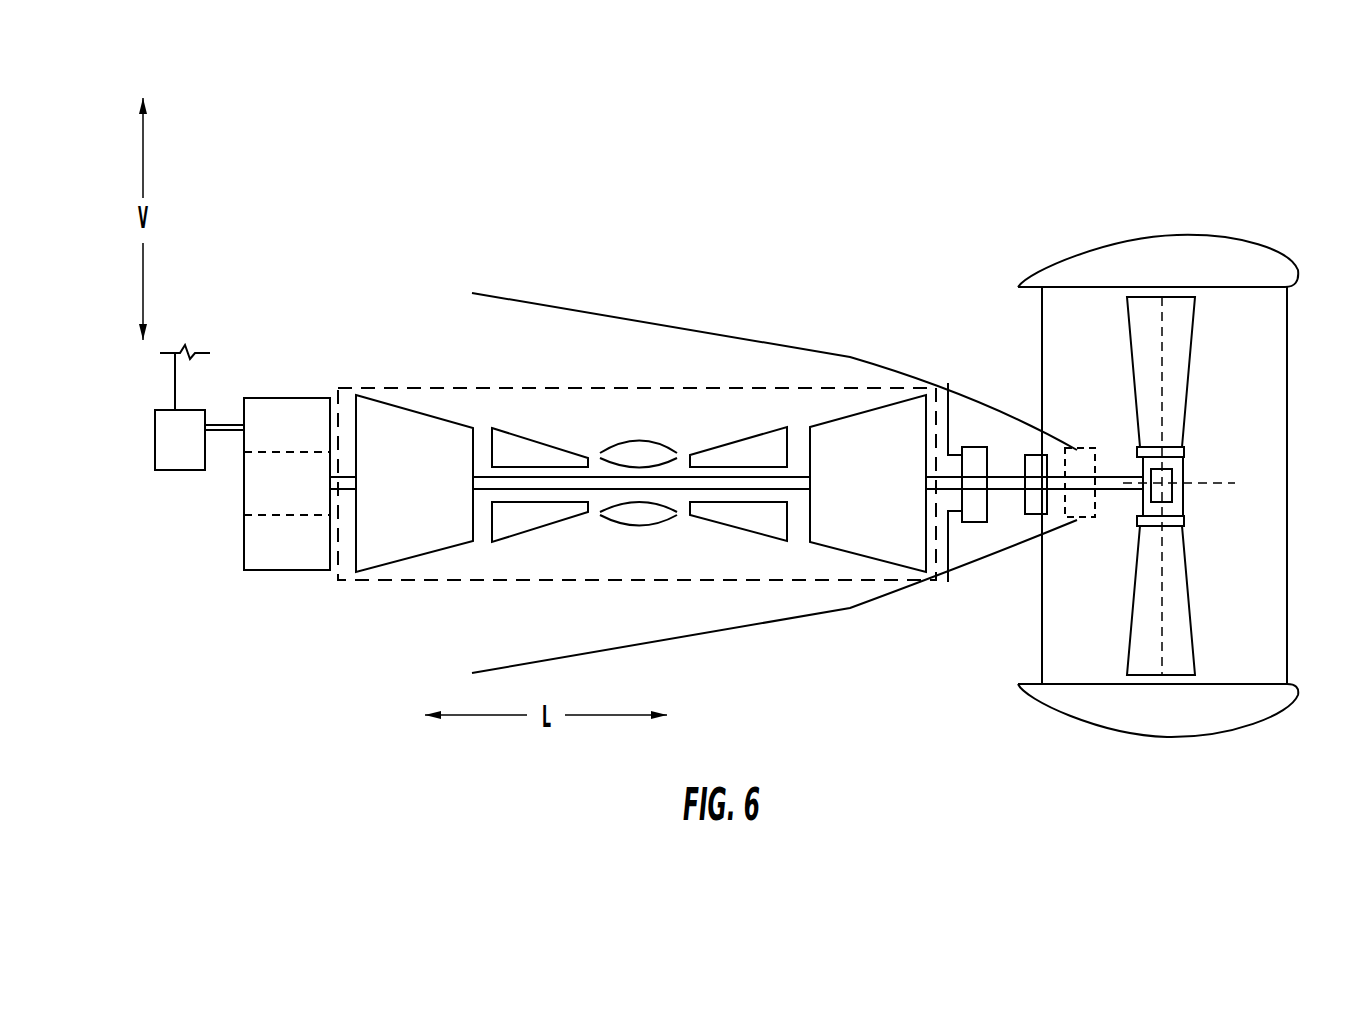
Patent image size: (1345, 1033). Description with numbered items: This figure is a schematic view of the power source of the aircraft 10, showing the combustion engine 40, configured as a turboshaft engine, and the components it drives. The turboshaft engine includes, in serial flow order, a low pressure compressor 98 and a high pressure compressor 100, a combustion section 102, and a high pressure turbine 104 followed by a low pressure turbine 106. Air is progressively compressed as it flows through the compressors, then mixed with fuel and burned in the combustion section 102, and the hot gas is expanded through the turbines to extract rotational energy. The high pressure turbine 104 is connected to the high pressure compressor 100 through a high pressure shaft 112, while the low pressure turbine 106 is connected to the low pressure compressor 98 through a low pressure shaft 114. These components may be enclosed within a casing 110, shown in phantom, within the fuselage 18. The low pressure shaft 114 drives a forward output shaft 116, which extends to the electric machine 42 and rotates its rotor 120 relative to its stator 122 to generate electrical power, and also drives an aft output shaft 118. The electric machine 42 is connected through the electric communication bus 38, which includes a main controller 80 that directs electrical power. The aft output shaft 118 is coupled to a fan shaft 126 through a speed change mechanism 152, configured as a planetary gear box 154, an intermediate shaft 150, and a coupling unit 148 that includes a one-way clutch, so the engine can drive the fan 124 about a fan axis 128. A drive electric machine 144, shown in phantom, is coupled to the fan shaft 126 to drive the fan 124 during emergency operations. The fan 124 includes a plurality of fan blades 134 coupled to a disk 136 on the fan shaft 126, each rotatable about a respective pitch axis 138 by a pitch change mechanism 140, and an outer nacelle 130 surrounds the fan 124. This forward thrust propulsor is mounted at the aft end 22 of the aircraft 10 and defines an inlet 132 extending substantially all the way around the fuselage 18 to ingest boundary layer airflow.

The aircraft 10 is at (908, 76).
The aft end 22 is at (1181, 115).
The fuselage 18 is at (774, 474).
The combustion engine 40 is at (637, 446).
The casing 110 is at (686, 363).
The electric communication bus 38 is at (207, 336).
The main controller 80 is at (192, 451).
The electric machine 42 is at (291, 437).
The rotor 120 is at (221, 515).
The stator 122 is at (227, 581).
The forward output shaft 116 is at (361, 548).
The low pressure compressor 98 is at (428, 496).
The high pressure compressor 100 is at (540, 530).
The high pressure shaft 112 is at (635, 465).
The high pressure turbine 104 is at (738, 472).
The low pressure shaft 114 is at (641, 526).
The combustion section 102 is at (622, 578).
The low pressure turbine 106 is at (885, 496).
The inlet 132 is at (1034, 374).
The aft output shaft 118 is at (975, 411).
The speed change mechanism 152 is at (988, 509).
The planetary gear box 154 is at (988, 509).
The intermediate shaft 150 is at (1019, 463).
The coupling unit 148 is at (1065, 414).
The drive electric machine 144 is at (1098, 462).
The fan 124 is at (1072, 263).
The outer nacelle 130 is at (1158, 468).
The fan blades 134 is at (1193, 486).
The pitch axis 138 is at (1182, 600).
The disk 136 is at (1193, 459).
The fan shaft 126 is at (1138, 550).
The pitch change mechanism 140 is at (1205, 499).
The fan axis 128 is at (1190, 461).